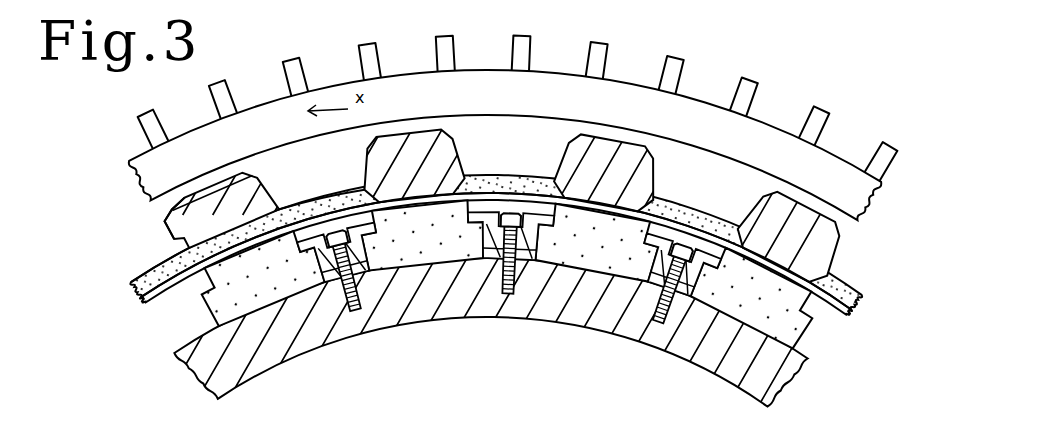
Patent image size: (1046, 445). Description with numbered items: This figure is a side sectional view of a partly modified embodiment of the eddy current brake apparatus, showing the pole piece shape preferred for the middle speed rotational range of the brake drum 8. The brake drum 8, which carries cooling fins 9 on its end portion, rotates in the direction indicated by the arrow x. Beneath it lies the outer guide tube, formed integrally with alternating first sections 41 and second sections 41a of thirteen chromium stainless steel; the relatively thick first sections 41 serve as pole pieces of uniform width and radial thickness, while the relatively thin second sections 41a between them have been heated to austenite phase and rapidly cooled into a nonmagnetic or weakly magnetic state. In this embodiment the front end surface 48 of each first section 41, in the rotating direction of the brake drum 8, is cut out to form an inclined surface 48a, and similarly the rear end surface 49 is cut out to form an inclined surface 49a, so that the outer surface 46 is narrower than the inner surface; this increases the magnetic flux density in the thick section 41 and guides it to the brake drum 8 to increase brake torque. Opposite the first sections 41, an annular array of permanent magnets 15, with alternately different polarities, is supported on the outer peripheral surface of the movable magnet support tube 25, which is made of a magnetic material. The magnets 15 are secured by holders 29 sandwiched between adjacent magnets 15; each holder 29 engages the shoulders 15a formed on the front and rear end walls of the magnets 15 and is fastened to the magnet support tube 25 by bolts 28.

The brake drum 8 is at (133, 186).
The cooling fins 9 is at (304, 72).
The permanent magnets 15 is at (234, 314).
The shoulders 15a is at (150, 302).
The movable magnet support tube 25 is at (247, 364).
The bolts 28 is at (355, 311).
The holders 29 is at (368, 272).
The first sections 41 is at (421, 178).
The second sections 41a is at (510, 176).
The outer surface 46 is at (214, 182).
The front end surface 48 is at (186, 259).
The inclined surface 48a is at (171, 214).
The rear end surface 49 is at (284, 195).
The inclined surface 49a is at (262, 172).